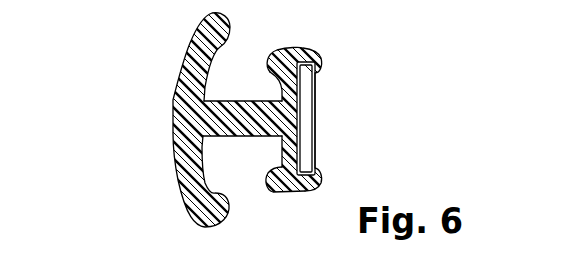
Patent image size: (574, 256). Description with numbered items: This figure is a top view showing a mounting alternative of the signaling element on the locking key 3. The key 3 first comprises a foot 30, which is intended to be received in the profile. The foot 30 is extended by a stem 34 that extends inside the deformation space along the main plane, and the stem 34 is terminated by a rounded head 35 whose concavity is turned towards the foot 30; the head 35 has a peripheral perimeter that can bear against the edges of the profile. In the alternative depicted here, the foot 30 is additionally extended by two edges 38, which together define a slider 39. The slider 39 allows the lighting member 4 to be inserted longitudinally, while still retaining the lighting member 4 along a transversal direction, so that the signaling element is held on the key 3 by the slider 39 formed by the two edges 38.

The key 3 is at (138, 173).
The lighting member 4 is at (324, 97).
The foot 30 is at (268, 176).
The stem 34 is at (242, 118).
The rounded head 35 is at (179, 71).
The edges 38 is at (320, 66).
The slider 39 is at (327, 138).